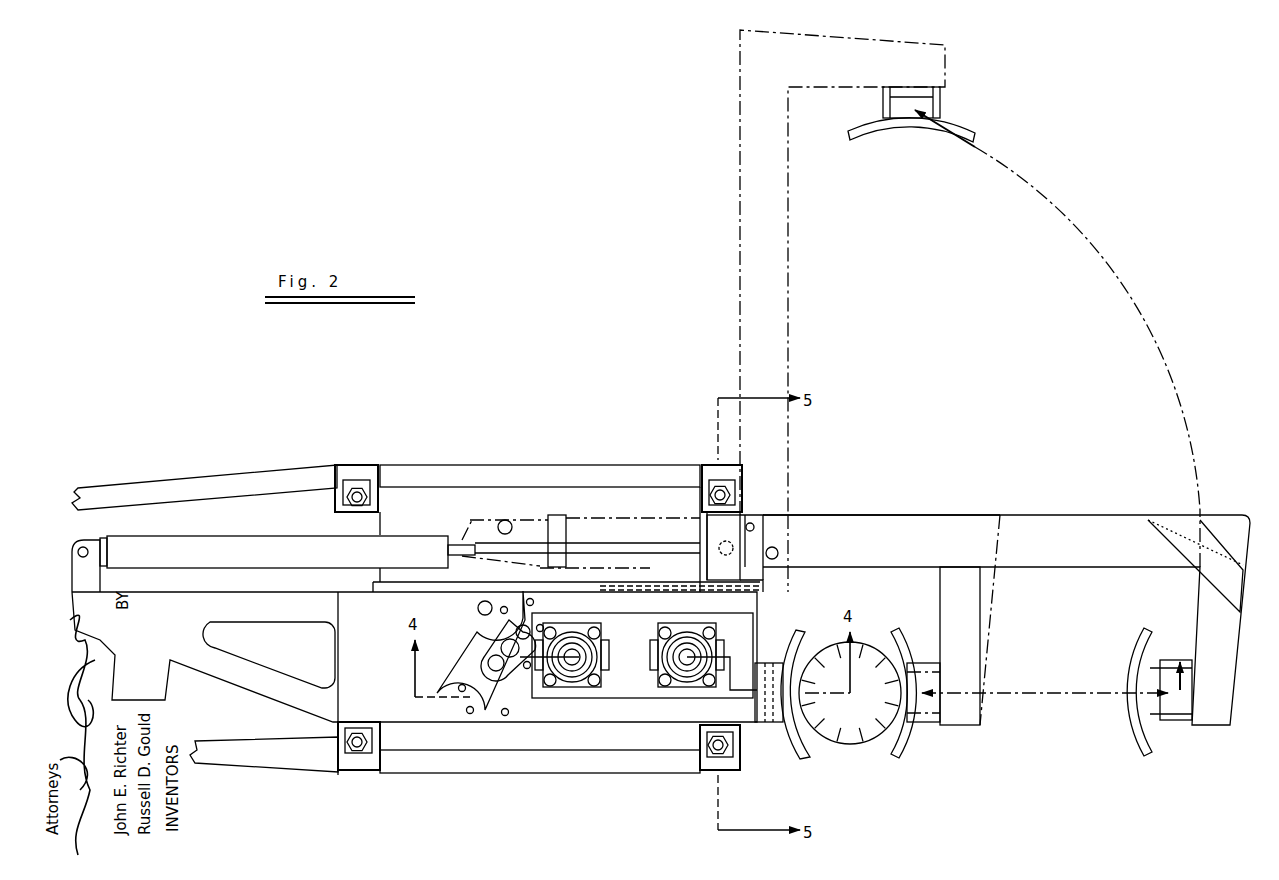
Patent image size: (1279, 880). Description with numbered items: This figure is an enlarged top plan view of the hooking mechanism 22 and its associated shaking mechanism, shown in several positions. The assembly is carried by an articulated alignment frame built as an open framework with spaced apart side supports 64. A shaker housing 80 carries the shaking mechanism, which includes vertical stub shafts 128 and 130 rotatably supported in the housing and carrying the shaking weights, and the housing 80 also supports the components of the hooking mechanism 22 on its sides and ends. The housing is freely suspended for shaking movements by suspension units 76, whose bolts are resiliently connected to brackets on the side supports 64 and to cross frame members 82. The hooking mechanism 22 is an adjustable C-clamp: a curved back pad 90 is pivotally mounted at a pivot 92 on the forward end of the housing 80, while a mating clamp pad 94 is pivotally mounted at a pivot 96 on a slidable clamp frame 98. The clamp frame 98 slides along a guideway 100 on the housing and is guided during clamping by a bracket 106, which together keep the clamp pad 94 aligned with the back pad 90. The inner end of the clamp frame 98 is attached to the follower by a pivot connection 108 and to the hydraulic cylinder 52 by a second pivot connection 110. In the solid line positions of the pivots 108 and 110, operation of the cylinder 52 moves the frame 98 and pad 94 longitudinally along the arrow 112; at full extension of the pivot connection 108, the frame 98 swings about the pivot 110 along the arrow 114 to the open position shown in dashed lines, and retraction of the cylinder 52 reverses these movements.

The hooking mechanism 22 is at (950, 497).
The hydraulic cylinder 52 is at (250, 560).
The side supports 64 is at (258, 470).
The suspension units 76 is at (357, 488).
The shaker housing 80 is at (384, 664).
The cross frame members 82 is at (355, 578).
The back pad 90 is at (815, 760).
The pivot of back pad 92 is at (776, 724).
The clamp pad 94 is at (930, 140).
The pivot of clamp pad 96 is at (1178, 740).
The clamp frame 98 is at (740, 200).
The guideway 100 is at (452, 590).
The bracket 106 is at (740, 598).
The pivot connection 108 is at (718, 548).
The second pivot connection 110 is at (762, 520).
The arrow 112 is at (1050, 697).
The arrow 114 is at (1145, 300).
The vertical stub shaft 128 is at (572, 660).
The vertical stub shaft 130 is at (687, 660).